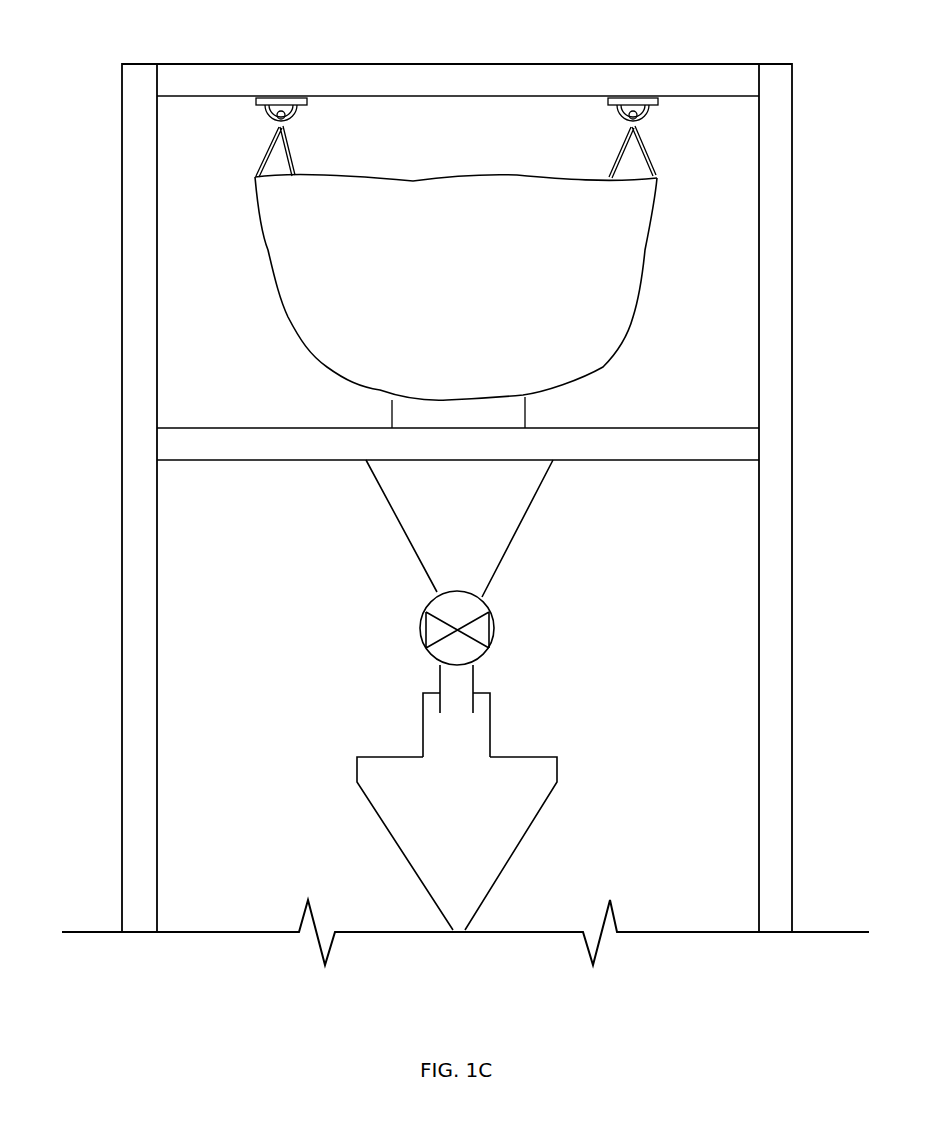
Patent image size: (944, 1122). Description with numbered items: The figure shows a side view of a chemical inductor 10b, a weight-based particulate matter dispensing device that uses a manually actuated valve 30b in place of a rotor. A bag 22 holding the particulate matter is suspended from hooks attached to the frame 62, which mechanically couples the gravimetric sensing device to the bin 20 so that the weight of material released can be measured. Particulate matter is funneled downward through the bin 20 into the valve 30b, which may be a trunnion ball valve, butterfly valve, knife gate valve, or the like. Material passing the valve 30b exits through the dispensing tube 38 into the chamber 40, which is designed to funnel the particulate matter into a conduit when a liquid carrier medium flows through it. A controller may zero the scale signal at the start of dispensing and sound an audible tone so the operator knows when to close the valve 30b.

The inductor 10b is at (102, 46).
The bag 22 is at (613, 268).
The frame 62 is at (782, 323).
The bin 20 is at (498, 511).
The manually actuated valve 30b is at (495, 617).
The dispensing tube 38 is at (458, 678).
The chamber 40 is at (533, 822).